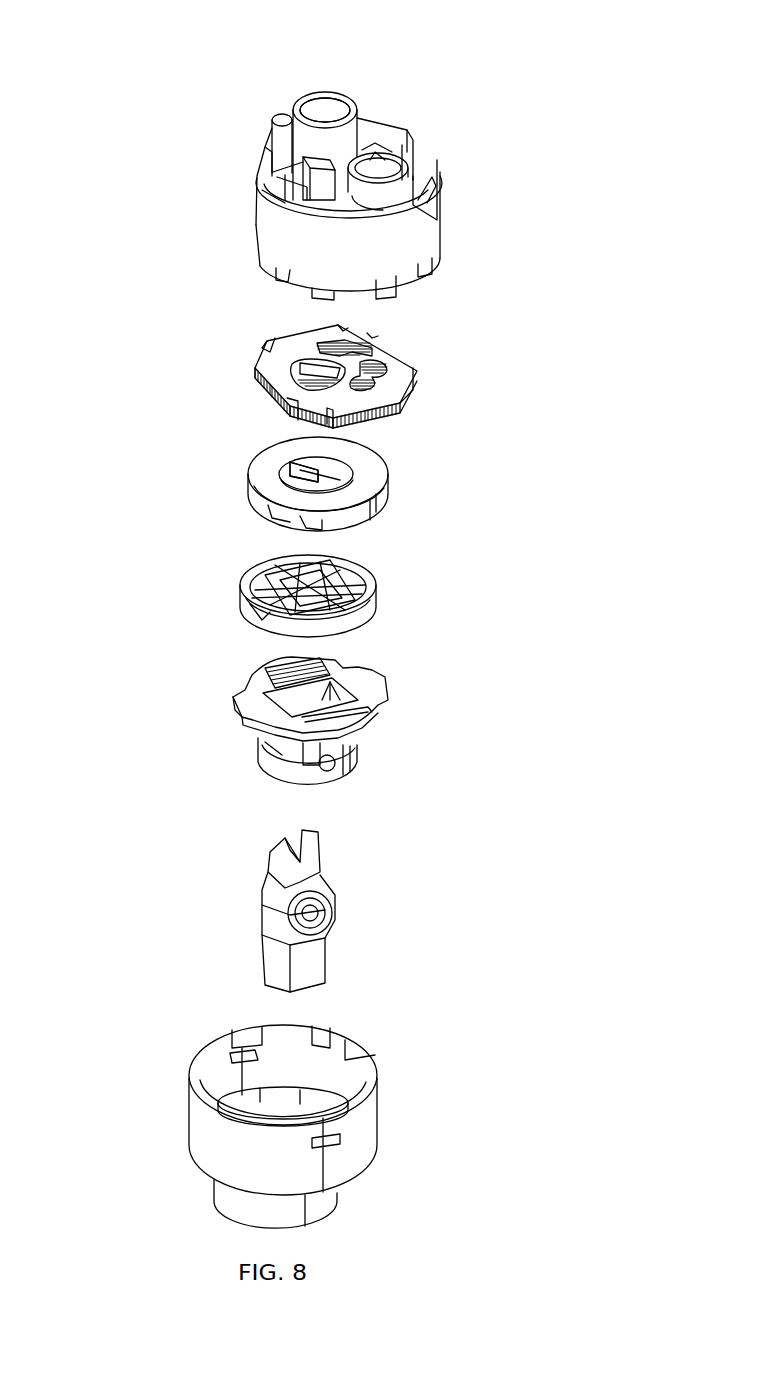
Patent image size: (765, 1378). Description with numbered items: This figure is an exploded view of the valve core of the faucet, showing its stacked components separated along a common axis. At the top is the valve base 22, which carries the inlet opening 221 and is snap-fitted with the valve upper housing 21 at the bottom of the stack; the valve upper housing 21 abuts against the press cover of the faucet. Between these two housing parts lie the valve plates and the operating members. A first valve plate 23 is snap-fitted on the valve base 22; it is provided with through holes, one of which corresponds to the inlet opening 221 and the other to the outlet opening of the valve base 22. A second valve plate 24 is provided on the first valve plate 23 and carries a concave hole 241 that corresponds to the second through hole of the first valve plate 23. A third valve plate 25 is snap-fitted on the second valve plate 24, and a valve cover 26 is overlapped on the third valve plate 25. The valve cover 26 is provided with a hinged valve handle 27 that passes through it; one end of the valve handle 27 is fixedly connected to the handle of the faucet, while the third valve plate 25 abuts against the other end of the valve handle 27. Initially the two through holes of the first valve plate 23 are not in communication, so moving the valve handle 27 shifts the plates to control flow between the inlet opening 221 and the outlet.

The valve upper housing 21 is at (357, 1132).
The valve base 22 is at (430, 238).
The inlet opening 221 is at (323, 115).
The first valve plate 23 is at (255, 368).
The second valve plate 24 is at (388, 477).
The slot of ring 241 is at (277, 473).
The third valve plate 25 is at (377, 603).
The valve cover 26 is at (263, 693).
The valve handle 27 is at (330, 927).